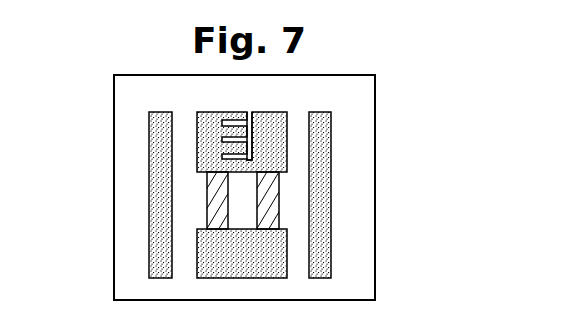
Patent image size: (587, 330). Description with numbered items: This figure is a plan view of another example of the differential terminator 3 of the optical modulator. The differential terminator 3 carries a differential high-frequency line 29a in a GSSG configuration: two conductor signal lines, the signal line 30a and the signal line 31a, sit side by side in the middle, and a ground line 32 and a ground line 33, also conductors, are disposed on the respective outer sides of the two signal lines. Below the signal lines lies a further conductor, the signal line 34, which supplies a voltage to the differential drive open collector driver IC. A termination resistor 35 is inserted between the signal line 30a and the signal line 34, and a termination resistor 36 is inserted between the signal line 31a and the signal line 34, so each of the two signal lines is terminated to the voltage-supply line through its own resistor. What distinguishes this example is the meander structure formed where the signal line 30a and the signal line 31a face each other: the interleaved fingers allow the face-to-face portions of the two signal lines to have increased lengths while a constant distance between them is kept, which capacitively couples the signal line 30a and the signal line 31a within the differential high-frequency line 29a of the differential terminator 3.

The differential terminator 3 is at (376, 114).
The differential high-frequency line 29a is at (239, 131).
The signal line 30a is at (287, 135).
The signal line 31a is at (197, 129).
The ground line 32 is at (342, 267).
The ground line 33 is at (155, 269).
The signal line 34 is at (230, 277).
The termination resistor 35 is at (271, 218).
The termination resistor 36 is at (217, 217).